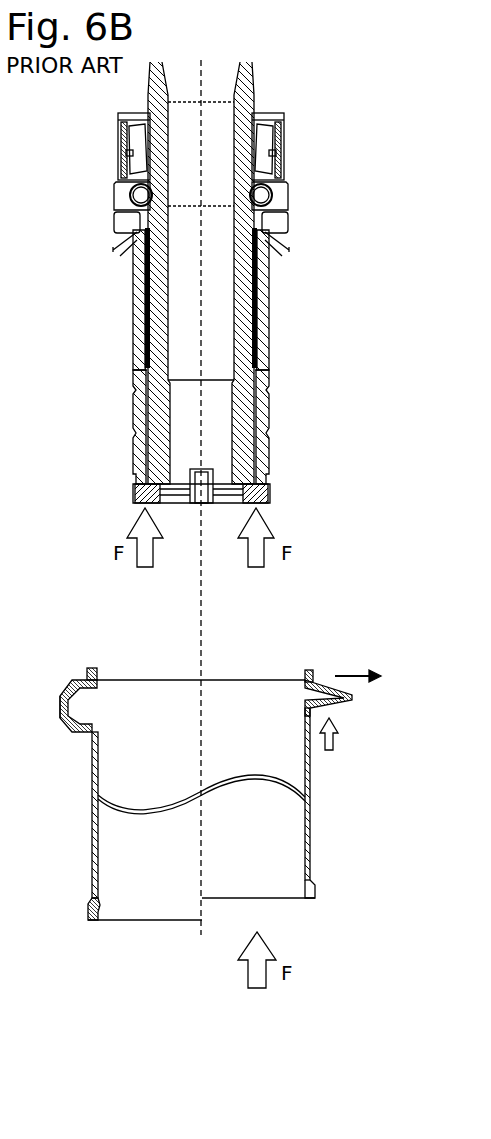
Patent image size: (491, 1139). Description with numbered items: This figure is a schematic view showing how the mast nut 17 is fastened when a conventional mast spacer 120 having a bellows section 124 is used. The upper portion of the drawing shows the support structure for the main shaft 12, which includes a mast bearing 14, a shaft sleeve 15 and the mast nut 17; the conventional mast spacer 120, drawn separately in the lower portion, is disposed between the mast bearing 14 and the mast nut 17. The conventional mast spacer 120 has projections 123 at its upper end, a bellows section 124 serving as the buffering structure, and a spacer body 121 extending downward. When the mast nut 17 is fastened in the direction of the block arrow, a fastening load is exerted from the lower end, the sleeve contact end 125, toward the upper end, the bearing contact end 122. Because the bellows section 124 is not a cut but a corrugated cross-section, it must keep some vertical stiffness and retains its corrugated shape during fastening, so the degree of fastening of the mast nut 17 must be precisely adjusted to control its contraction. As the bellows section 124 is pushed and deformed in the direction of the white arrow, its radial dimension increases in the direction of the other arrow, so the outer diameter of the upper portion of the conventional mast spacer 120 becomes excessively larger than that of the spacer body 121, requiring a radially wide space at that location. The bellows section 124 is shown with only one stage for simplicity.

The main shaft 12 is at (140, 283).
The mast bearing 14 is at (125, 163).
The shaft sleeve 15 is at (262, 383).
The mast nut 17 is at (270, 493).
The conventional mast spacer 120 is at (263, 220).
The spacer body 121 is at (312, 852).
The bearing contact end 122 is at (80, 680).
The projections 123 is at (92, 668).
The bellows section 124 is at (60, 715).
The sleeve contact end 125 is at (88, 912).